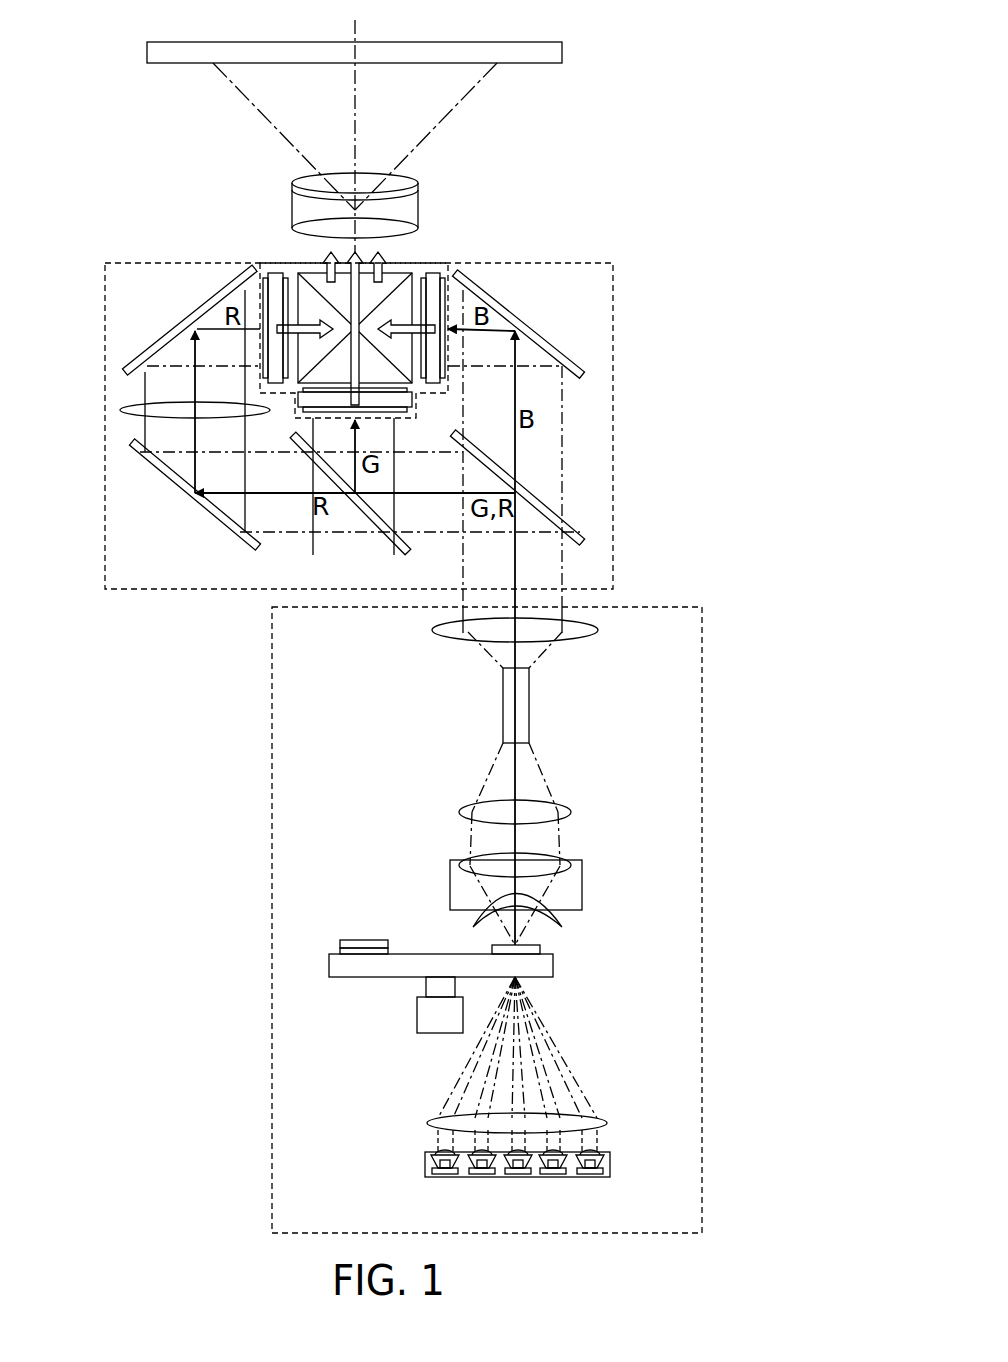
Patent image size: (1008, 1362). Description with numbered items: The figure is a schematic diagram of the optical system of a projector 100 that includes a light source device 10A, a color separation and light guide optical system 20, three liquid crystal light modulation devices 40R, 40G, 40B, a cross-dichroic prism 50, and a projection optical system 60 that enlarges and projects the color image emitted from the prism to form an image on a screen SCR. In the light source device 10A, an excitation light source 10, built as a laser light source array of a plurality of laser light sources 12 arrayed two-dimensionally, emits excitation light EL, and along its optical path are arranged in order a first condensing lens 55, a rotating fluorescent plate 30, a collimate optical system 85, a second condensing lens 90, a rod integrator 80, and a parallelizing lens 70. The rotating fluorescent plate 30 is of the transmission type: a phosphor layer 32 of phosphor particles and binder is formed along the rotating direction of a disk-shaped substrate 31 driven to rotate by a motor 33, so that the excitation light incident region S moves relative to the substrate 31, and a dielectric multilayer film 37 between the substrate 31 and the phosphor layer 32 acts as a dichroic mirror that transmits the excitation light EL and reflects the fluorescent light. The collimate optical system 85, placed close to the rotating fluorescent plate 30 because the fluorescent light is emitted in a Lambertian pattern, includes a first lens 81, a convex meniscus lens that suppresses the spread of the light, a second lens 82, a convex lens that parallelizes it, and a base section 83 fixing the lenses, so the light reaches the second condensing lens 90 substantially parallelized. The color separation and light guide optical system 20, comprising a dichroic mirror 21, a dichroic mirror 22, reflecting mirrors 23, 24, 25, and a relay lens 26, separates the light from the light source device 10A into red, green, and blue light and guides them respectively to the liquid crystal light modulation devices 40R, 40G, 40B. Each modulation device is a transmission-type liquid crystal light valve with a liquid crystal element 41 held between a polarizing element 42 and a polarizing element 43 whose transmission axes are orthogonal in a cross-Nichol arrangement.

The projector 100 is at (672, 88).
The screen SCR is at (543, 64).
The projection optical system 60 is at (420, 205).
The cross-dichroic prism 50 is at (303, 273).
The liquid crystal light modulation device 40R is at (208, 265).
The polarizing element 42 is at (265, 275).
The liquid crystal element 41 is at (275, 273).
The polarizing element 43 is at (286, 275).
The liquid crystal light modulation device 40B is at (432, 273).
The liquid crystal light modulation device 40G is at (298, 400).
The color separation and light guide optical system 20 is at (615, 298).
The reflecting mirror 25 is at (163, 340).
The reflecting mirror 23 is at (545, 342).
The relay lens 26 is at (125, 410).
The reflecting mirror 24 is at (218, 527).
The dichroic mirror 22 is at (393, 545).
The dichroic mirror 21 is at (578, 536).
The light source device 10A is at (703, 650).
The parallelizing lens 70 is at (575, 637).
The rod integrator 80 is at (530, 695).
The second condensing lens 90 is at (565, 805).
The second lens 82 is at (470, 865).
The base section 83 is at (583, 865).
The collimate optical system 85 is at (545, 887).
The first lens 81 is at (475, 915).
The excitation light incident region S is at (336, 920).
The phosphor layer 32 is at (340, 942).
The dielectric multilayer film 37 is at (340, 950).
The rotating fluorescent plate 30 is at (468, 957).
The substrate 31 is at (548, 978).
The motor 33 is at (420, 1015).
The excitation light EL is at (570, 1062).
The first condensing lens 55 is at (598, 1117).
The excitation light source 10 is at (562, 1188).
The laser light sources 12 is at (515, 1178).